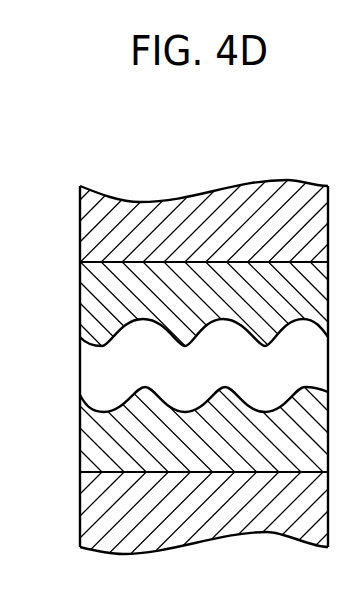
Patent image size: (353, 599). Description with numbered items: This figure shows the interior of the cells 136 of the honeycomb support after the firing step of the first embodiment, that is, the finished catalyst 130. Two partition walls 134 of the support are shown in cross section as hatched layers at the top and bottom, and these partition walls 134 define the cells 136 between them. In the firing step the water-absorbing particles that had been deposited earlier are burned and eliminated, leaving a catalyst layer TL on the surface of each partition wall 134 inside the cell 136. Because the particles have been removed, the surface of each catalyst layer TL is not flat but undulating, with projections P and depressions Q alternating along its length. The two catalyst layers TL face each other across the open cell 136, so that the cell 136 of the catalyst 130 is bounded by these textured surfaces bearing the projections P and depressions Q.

The catalyst 130 is at (116, 177).
The partition walls 134 is at (225, 241).
The cells 136 is at (166, 367).
The catalyst layer TL is at (222, 308).
The projections P is at (183, 347).
The depressions Q is at (204, 367).